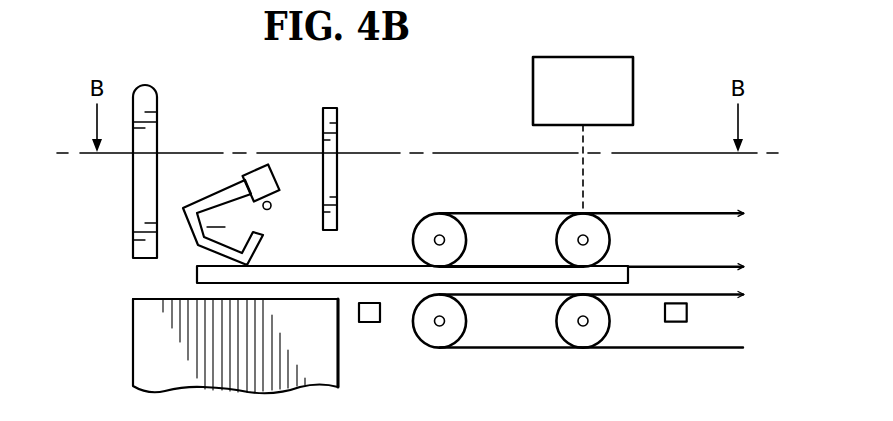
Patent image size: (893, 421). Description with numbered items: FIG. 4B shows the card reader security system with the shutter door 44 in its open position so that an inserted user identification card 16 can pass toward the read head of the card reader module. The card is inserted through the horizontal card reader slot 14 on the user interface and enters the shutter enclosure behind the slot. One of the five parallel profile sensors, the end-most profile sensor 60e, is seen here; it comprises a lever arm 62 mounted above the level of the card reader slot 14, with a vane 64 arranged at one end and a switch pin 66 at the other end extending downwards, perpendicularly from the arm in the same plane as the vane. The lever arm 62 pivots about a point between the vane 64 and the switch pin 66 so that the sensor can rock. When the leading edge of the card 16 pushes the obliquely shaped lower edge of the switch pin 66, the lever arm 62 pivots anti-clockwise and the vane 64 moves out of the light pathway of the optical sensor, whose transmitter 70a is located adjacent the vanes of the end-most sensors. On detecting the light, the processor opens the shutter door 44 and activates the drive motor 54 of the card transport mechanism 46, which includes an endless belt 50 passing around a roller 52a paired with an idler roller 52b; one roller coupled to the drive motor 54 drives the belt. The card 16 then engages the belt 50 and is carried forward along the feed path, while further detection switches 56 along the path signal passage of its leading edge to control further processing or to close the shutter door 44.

The card reader slot 14 is at (145, 278).
The user identification card 16 is at (385, 275).
The shutter door 44 is at (338, 112).
The card transport mechanism 46 is at (715, 213).
The endless belt 50 is at (514, 212).
The roller 52a is at (430, 223).
The idler roller 52b is at (438, 338).
The drive motor 54 is at (532, 92).
The detection switches 56 is at (363, 322).
The profile sensor 60e is at (198, 193).
The lever arm 62 is at (218, 193).
The vane 64 is at (263, 177).
The switch pin 66 is at (190, 230).
The transmitter 70a is at (269, 210).